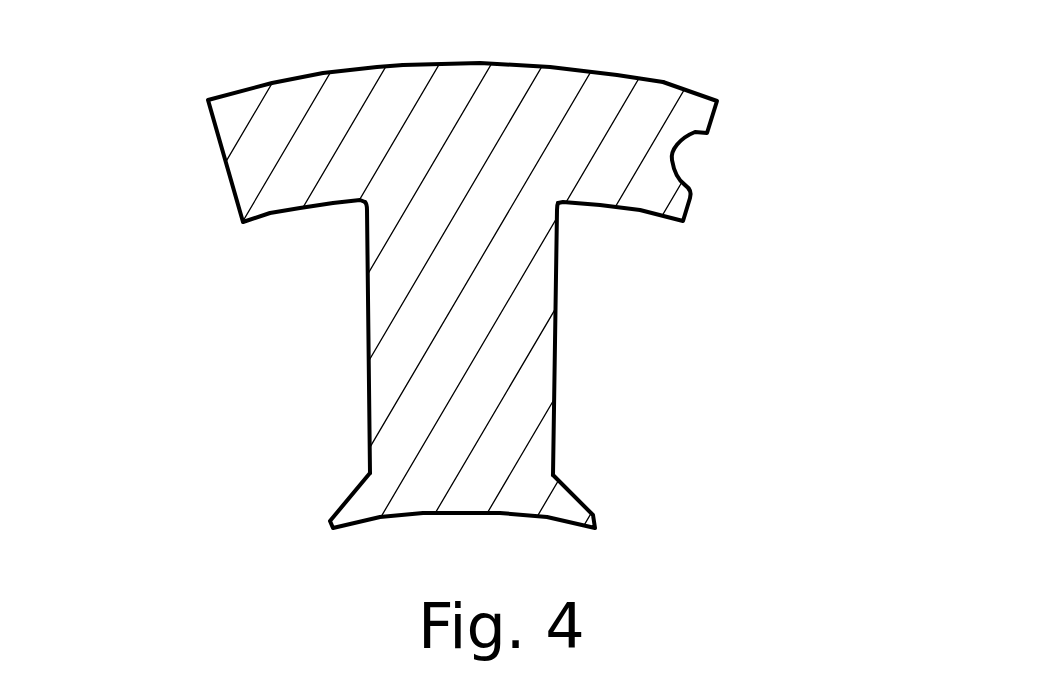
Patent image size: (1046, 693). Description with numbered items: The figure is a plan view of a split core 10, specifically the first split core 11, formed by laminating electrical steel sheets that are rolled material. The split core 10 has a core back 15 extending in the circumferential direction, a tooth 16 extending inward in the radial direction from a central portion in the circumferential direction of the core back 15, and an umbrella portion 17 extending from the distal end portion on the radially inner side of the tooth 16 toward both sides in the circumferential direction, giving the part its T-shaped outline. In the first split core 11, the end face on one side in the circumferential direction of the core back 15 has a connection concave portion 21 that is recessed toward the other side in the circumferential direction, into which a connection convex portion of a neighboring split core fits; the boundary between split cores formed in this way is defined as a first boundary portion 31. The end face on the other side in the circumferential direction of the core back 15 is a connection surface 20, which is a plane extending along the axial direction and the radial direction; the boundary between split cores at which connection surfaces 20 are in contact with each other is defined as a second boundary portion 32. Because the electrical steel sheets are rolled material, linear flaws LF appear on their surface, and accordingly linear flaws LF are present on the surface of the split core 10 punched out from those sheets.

The split core 10 is at (796, 84).
The first split core 11 is at (435, 276).
The core back 15 is at (487, 140).
The tooth 16 is at (517, 343).
The umbrella portion 17 is at (560, 511).
The connection surface 20 is at (230, 172).
The second boundary portion 32 is at (305, 143).
The connection concave portion 21 is at (677, 178).
The first boundary portion 31 is at (637, 151).
The linear flaw LF is at (383, 150).